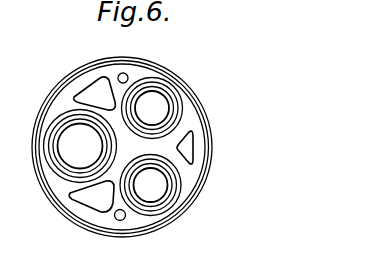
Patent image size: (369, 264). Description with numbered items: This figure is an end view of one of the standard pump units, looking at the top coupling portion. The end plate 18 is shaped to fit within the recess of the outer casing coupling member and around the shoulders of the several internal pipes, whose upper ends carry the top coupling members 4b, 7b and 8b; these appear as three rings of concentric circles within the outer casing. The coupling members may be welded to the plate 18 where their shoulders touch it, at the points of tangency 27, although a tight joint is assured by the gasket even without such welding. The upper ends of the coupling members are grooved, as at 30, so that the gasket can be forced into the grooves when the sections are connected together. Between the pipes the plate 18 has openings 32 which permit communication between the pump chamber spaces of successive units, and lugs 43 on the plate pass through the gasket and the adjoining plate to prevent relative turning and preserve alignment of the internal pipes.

The end plate 18 is at (146, 147).
The welds at points of tangency 27 is at (183, 208).
The grooves 30 is at (189, 187).
The openings 32 is at (95, 90).
The lugs 43 is at (113, 217).
The coupling member 4b is at (58, 165).
The coupling member 7b is at (172, 102).
The coupling member 8b is at (148, 193).